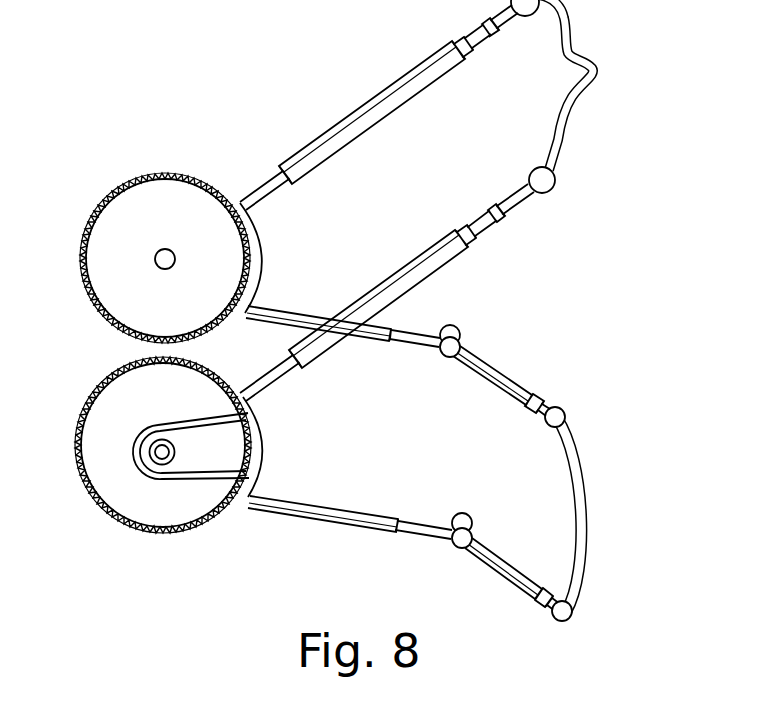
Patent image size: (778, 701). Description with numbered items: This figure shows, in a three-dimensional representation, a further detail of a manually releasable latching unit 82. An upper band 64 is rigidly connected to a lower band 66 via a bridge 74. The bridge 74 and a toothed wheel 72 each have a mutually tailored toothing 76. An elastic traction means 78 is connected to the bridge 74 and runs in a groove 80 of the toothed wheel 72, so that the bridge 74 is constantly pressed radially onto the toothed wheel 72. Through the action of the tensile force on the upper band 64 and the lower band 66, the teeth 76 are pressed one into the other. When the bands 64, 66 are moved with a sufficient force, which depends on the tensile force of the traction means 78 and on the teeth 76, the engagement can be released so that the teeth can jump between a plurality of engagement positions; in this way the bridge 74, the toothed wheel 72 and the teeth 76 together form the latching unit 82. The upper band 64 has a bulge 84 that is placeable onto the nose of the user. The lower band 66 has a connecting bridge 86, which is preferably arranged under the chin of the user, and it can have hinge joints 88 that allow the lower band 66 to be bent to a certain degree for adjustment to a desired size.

The upper band 64 is at (462, 243).
The lower band 66 is at (413, 530).
The toothed wheel 72 is at (207, 400).
The bridge 74 is at (260, 450).
The toothing 76 is at (262, 422).
The elastic traction means 78 is at (203, 475).
The groove 80 is at (152, 470).
The latching unit 82 is at (110, 410).
The bulge 84 is at (607, 62).
The connecting bridge 86 is at (580, 517).
The hinge joints 88 is at (447, 362).